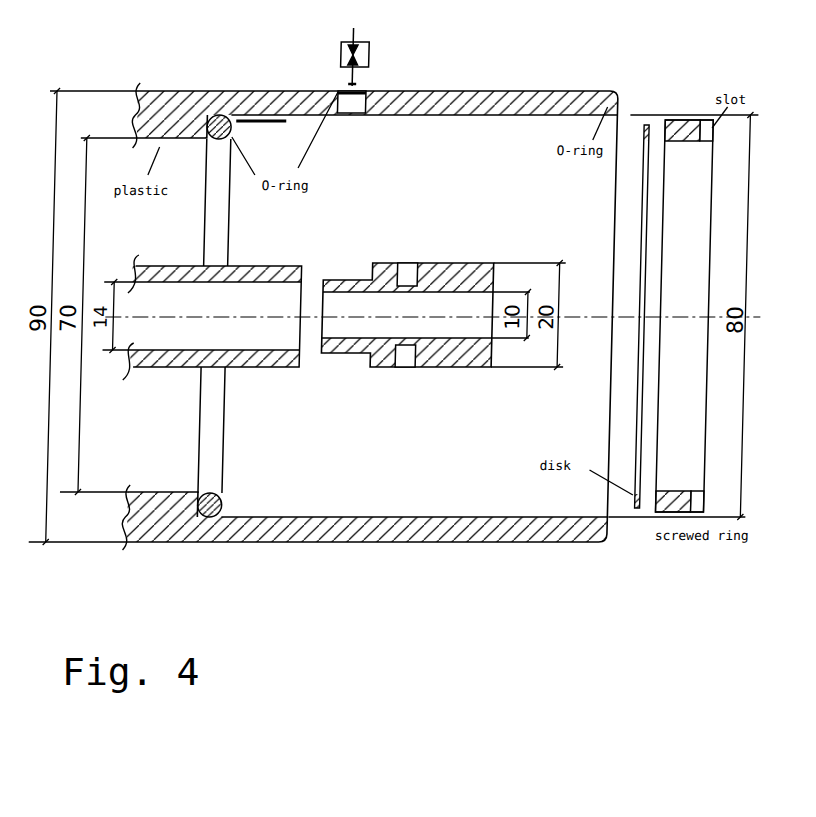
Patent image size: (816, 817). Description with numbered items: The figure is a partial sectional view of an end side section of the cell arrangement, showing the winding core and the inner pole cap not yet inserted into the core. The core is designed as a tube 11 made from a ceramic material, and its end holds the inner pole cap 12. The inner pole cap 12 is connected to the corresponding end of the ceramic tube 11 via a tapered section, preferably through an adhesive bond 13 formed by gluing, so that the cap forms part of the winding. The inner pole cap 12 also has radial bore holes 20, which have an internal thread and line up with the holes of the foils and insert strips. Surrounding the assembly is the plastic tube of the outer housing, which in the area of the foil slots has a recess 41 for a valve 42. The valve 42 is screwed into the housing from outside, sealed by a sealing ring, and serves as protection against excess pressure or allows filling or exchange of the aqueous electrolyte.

The tube 11 is at (267, 370).
The inner pole cap 12 is at (456, 263).
The adhesive bond 13 is at (297, 358).
The radial bore holes 20 is at (409, 265).
The recess 41 is at (358, 113).
The valve 42 is at (368, 45).